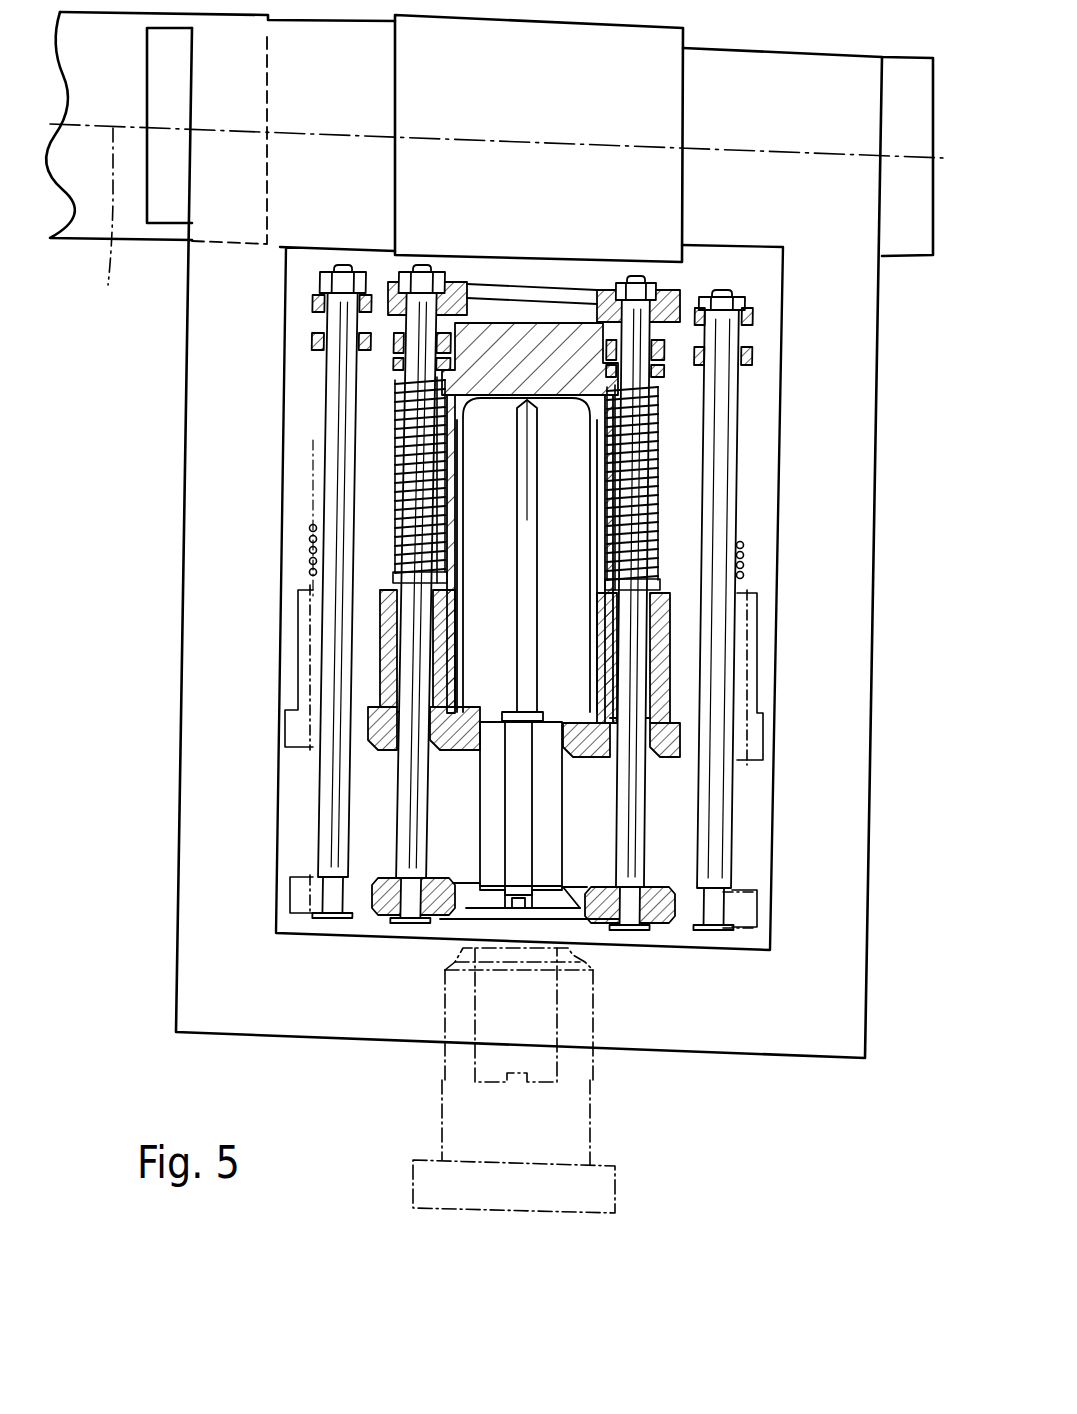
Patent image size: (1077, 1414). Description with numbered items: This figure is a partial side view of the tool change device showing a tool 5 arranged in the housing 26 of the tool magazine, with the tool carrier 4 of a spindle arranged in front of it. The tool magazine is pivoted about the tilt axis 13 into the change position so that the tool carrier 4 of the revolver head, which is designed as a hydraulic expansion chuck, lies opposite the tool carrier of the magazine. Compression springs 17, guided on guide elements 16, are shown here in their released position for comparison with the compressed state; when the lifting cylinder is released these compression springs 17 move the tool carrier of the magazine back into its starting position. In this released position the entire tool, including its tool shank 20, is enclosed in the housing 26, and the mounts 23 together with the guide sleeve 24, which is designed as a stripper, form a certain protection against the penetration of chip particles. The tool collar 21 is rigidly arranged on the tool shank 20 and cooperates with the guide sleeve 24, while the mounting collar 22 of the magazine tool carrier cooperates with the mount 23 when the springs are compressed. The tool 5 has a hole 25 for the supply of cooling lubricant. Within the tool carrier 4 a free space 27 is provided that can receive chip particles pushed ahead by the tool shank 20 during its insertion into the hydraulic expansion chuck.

The tool carrier 4 is at (562, 1135).
The tool 5 is at (555, 635).
The tilt axis 13 is at (110, 224).
The guide element 16 is at (657, 517).
The compression spring 17 is at (657, 455).
The tool shank 20 is at (543, 813).
The tool collar 21 is at (573, 710).
The mounting collar 22 is at (673, 727).
The mount 23 is at (683, 883).
The guide sleeve 24 is at (560, 903).
The hole 25 is at (517, 863).
The housing 26 is at (197, 813).
The free space 27 is at (490, 1063).